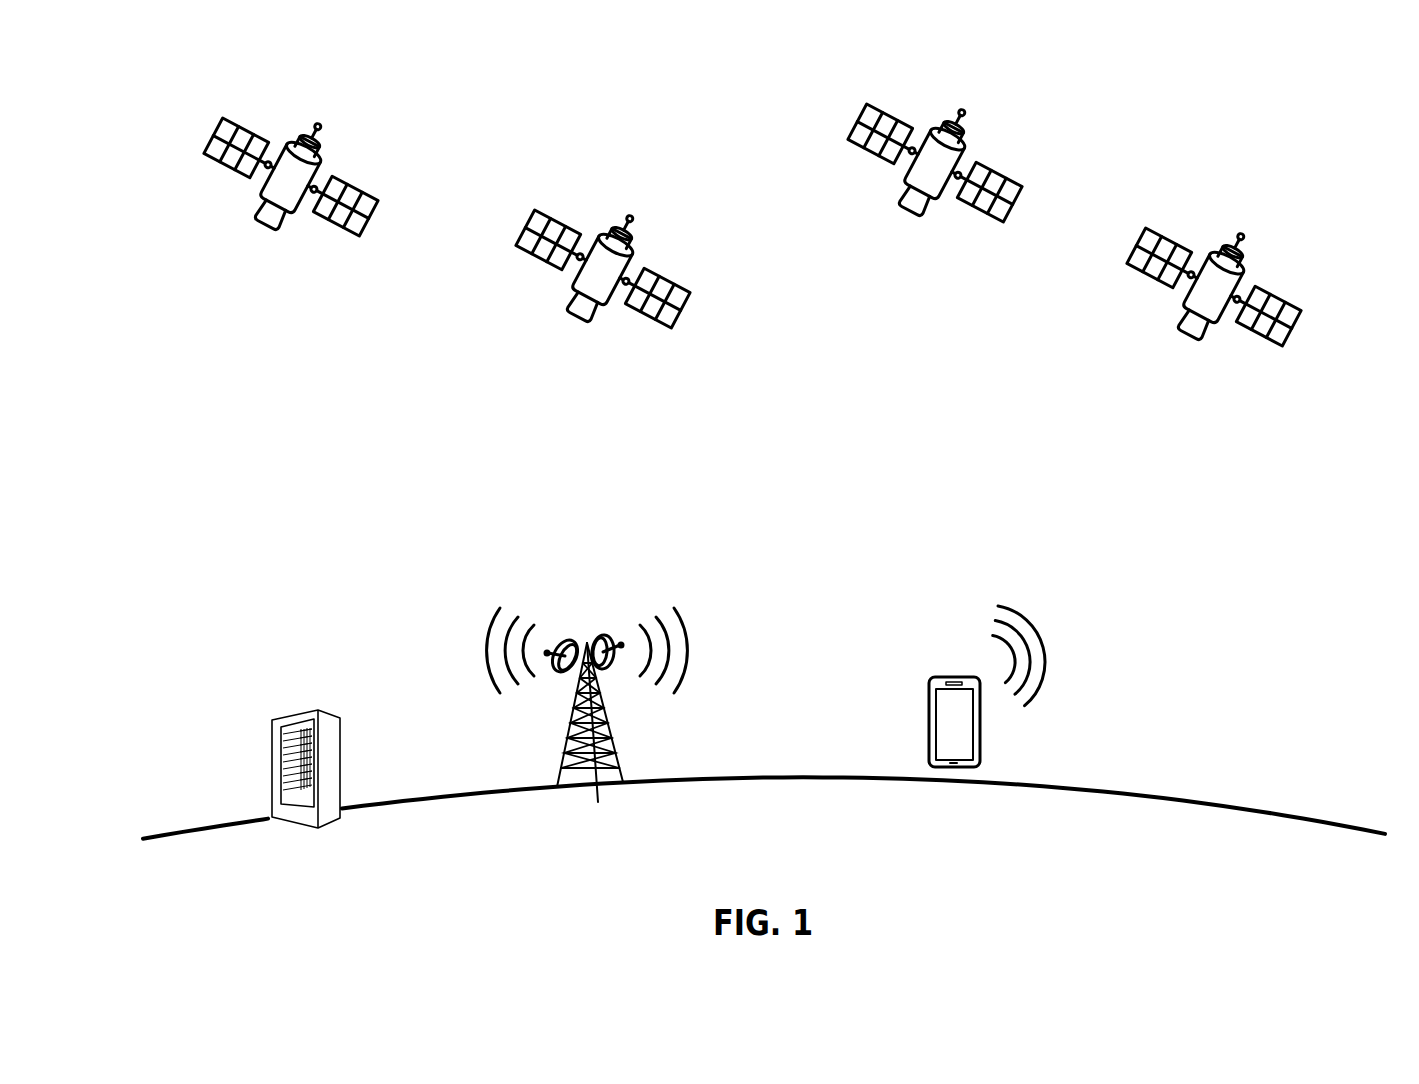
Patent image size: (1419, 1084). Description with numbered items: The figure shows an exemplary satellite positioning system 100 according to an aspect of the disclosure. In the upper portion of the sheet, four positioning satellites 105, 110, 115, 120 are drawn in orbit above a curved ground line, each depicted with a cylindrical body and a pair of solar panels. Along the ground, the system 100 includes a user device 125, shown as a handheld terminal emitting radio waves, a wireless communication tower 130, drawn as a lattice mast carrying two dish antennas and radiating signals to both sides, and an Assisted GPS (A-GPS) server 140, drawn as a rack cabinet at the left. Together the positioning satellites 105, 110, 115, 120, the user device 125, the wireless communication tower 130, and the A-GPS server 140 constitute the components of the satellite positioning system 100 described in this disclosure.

The satellite positioning system 100 is at (1322, 122).
The positioning satellite 105 is at (322, 172).
The positioning satellite 110 is at (635, 262).
The positioning satellite 115 is at (967, 154).
The positioning satellite 120 is at (1245, 277).
The user device 125 is at (955, 676).
The wireless communication tower 130 is at (575, 642).
The Assisted GPS (A-GPS) server 140 is at (328, 713).